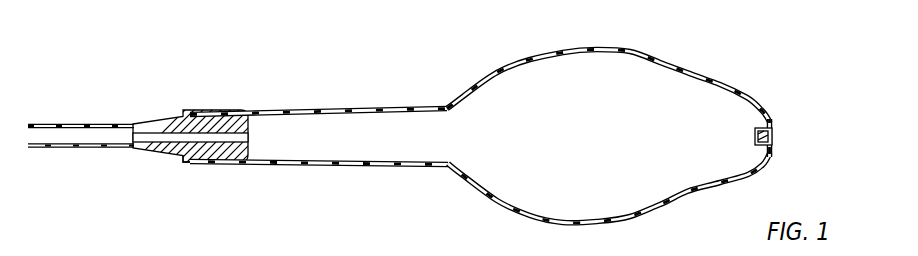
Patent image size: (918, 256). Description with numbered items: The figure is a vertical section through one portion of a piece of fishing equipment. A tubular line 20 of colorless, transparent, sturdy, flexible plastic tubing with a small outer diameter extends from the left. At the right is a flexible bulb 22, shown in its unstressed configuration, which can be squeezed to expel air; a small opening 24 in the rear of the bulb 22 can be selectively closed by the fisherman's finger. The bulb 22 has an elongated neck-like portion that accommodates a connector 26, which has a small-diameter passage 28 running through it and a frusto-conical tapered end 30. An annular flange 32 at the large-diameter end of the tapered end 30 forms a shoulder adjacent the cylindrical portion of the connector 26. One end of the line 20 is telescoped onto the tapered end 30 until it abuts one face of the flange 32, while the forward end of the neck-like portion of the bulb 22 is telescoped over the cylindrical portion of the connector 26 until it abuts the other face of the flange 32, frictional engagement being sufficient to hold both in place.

The tubular line 20 is at (433, 120).
The flexible bulb 22 is at (673, 61).
The small opening 24 is at (772, 140).
The connector 26 is at (240, 111).
The small-diameter passage 28 is at (216, 139).
The frusto-conical tapered end 30 is at (168, 149).
The annular flange 32 is at (187, 164).